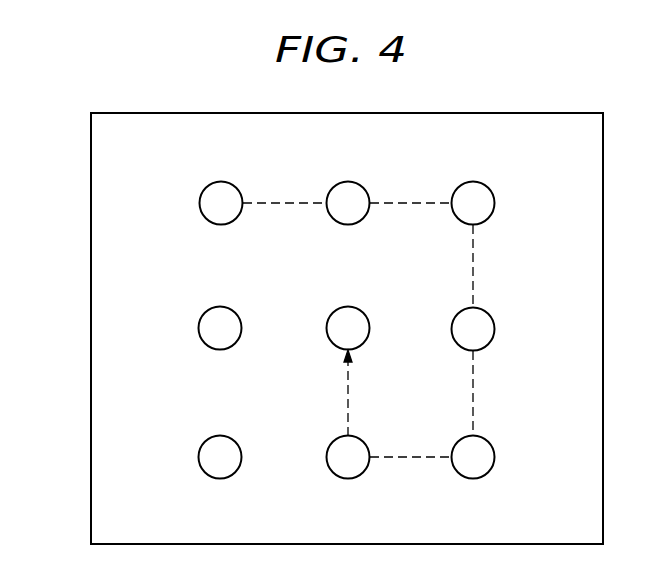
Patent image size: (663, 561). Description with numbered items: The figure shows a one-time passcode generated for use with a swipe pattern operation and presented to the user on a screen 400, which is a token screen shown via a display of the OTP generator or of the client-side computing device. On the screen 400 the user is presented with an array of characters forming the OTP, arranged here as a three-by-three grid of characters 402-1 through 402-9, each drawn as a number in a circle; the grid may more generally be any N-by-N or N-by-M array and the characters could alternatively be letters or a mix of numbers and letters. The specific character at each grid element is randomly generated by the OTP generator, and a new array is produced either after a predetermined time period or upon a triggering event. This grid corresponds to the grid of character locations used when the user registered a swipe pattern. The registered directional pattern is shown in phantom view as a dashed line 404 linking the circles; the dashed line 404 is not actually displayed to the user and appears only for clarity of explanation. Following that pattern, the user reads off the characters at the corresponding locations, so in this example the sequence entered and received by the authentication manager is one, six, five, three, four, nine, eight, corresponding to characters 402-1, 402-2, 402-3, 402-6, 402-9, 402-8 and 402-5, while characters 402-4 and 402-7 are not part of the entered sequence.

The screen 400 is at (91, 128).
The character 402-1 is at (200, 202).
The character 402-2 is at (348, 181).
The character 402-3 is at (495, 203).
The character 402-4 is at (198, 327).
The character 402-5 is at (348, 306).
The character 402-6 is at (495, 329).
The character 402-7 is at (198, 456).
The character 402-8 is at (348, 479).
The character 402-9 is at (495, 457).
The dashed line 404 is at (477, 401).